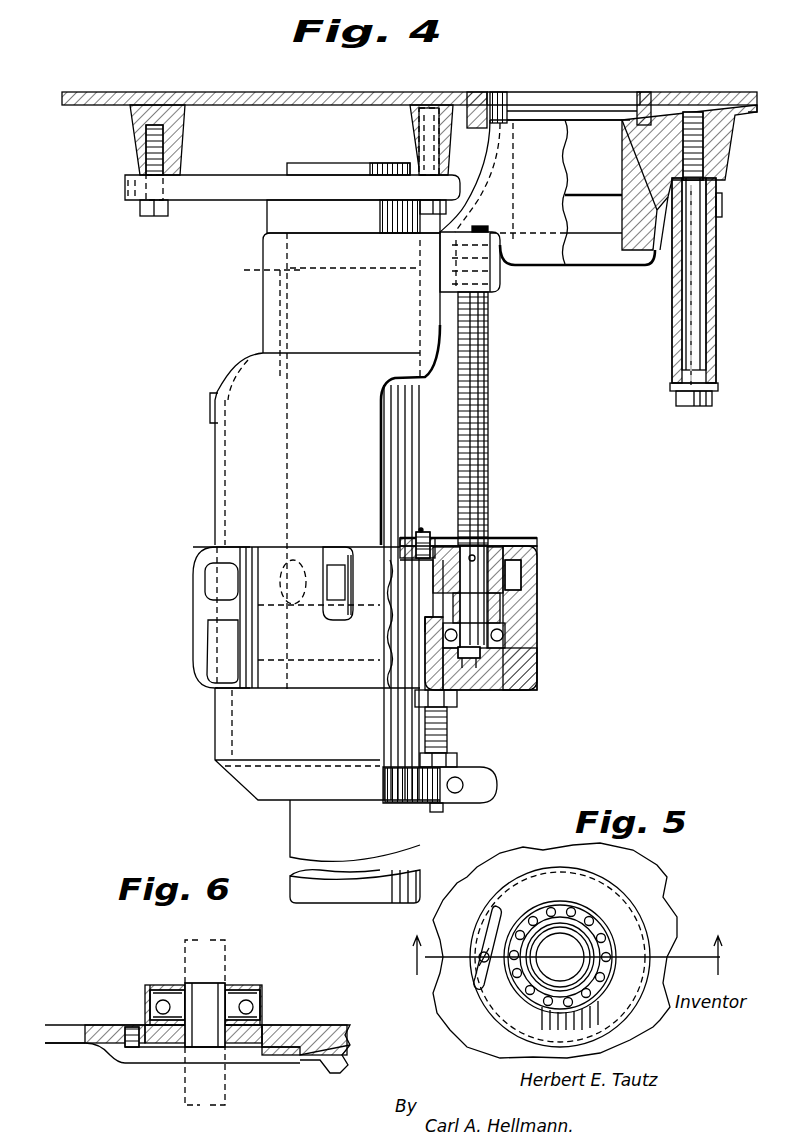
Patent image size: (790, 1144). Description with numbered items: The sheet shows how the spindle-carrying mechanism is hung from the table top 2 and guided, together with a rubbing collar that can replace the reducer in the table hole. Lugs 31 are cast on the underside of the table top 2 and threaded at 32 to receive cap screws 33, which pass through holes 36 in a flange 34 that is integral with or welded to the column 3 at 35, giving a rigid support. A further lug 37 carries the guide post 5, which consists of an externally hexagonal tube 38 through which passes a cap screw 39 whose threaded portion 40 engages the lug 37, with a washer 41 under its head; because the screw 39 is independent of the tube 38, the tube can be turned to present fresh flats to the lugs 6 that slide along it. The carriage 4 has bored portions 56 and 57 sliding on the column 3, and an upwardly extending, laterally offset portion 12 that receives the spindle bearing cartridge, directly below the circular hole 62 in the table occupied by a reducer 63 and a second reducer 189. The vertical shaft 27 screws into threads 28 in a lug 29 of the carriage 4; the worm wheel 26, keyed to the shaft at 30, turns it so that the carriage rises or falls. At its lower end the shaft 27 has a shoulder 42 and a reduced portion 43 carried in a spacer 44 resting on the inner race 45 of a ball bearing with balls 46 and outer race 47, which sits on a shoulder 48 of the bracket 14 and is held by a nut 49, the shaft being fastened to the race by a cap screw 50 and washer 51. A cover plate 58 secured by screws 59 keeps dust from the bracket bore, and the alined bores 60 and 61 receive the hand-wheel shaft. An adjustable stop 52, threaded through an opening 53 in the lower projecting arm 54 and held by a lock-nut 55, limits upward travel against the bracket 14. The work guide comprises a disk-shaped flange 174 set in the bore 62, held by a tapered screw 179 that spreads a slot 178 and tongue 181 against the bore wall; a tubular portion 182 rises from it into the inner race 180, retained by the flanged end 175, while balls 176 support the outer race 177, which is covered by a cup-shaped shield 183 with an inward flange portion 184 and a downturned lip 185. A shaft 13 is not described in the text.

In FIG. 4, the table top 2 is at (252, 92).
In FIG. 5, the table top 2 is at (653, 884).
In FIG. 6, the table top 2 is at (68, 1024).
In FIG. 4, the column 3 is at (285, 218).
In FIG. 4, the carriage 4 is at (215, 470).
In FIG. 4, the guide post 5 is at (731, 330).
In FIG. 4, the lugs 6 is at (723, 208).
In FIG. 5, the lugs 6 is at (567, 955).
In FIG. 4, the upwardly extending and laterally offset portion 12 is at (593, 268).
In FIG. 5, the shaft 13 is at (572, 957).
In FIG. 6, the shaft 13 is at (222, 962).
In FIG. 4, the bracket 14 is at (250, 698).
In FIG. 4, the worm wheel 26 is at (521, 578).
In FIG. 4, the shaft 27 is at (490, 458).
In FIG. 4, the threads 28 is at (492, 295).
In FIG. 4, the lug 29 is at (497, 268).
In FIG. 4, the key 30 is at (470, 548).
In FIG. 4, the lugs 31 is at (180, 143).
In FIG. 4, the threads 32 is at (146, 156).
In FIG. 4, the cap screws 33 is at (160, 218).
In FIG. 4, the flange 34 is at (237, 195).
In FIG. 4, the weld 35 is at (290, 174).
In FIG. 4, the holes 36 is at (128, 188).
In FIG. 4, the lug 37 is at (705, 156).
In FIG. 4, the externally hexagonal tube 38 is at (710, 285).
In FIG. 4, the cap screw 39 is at (688, 305).
In FIG. 4, the threaded portion 40 is at (680, 150).
In FIG. 4, the washer 41 is at (718, 386).
In FIG. 4, the shoulder 42 is at (513, 560).
In FIG. 4, the portion of reduced diameter 43 is at (500, 612).
In FIG. 4, the spacer 44 is at (497, 600).
In FIG. 4, the inner race 45 is at (497, 662).
In FIG. 4, the balls 46 is at (427, 633).
In FIG. 4, the outer race 47 is at (505, 635).
In FIG. 4, the shoulder 48 is at (510, 656).
In FIG. 4, the nut 49 is at (510, 624).
In FIG. 4, the cap screw 50 is at (478, 664).
In FIG. 4, the washer 51 is at (427, 667).
In FIG. 4, the adjustable stop 52 is at (448, 732).
In FIG. 4, the opening 53 is at (455, 805).
In FIG. 4, the lower projecting arm 54 is at (483, 786).
In FIG. 4, the lock-nut 55 is at (458, 760).
In FIG. 4, the bored portion 56 is at (290, 806).
In FIG. 4, the bored portion 57 is at (275, 258).
In FIG. 4, the cover plate 58 is at (530, 540).
In FIG. 4, the screws 59 is at (425, 533).
In FIG. 4, the bore 60 is at (206, 548).
In FIG. 4, the bore 61 is at (338, 548).
In FIG. 4, the circular hole 62 is at (660, 108).
In FIG. 6, the circular hole 62 is at (93, 1047).
In FIG. 4, the reducer 63 is at (643, 104).
In FIG. 5, the flange 174 is at (630, 933).
In FIG. 6, the flange 174 is at (277, 1025).
In FIG. 6, the flange 175 is at (263, 988).
In FIG. 6, the balls 176 is at (150, 1007).
In FIG. 5, the outer race 177 is at (536, 1000).
In FIG. 6, the outer race 177 is at (137, 998).
In FIG. 5, the slot 178 is at (490, 908).
In FIG. 5, the tapered screw 179 is at (480, 950).
In FIG. 6, the tapered screw 179 is at (132, 1050).
In FIG. 5, the inner race 180 is at (520, 987).
In FIG. 6, the inner race 180 is at (148, 993).
In FIG. 5, the tongue 181 is at (480, 972).
In FIG. 5, the tubular portion 182 is at (558, 928).
In FIG. 6, the tubular portion 182 is at (223, 1047).
In FIG. 6, the shield 183 is at (145, 997).
In FIG. 6, the flange portion 184 is at (244, 982).
In FIG. 6, the lip 185 is at (190, 980).
In FIG. 4, the second reducer 189 is at (510, 97).